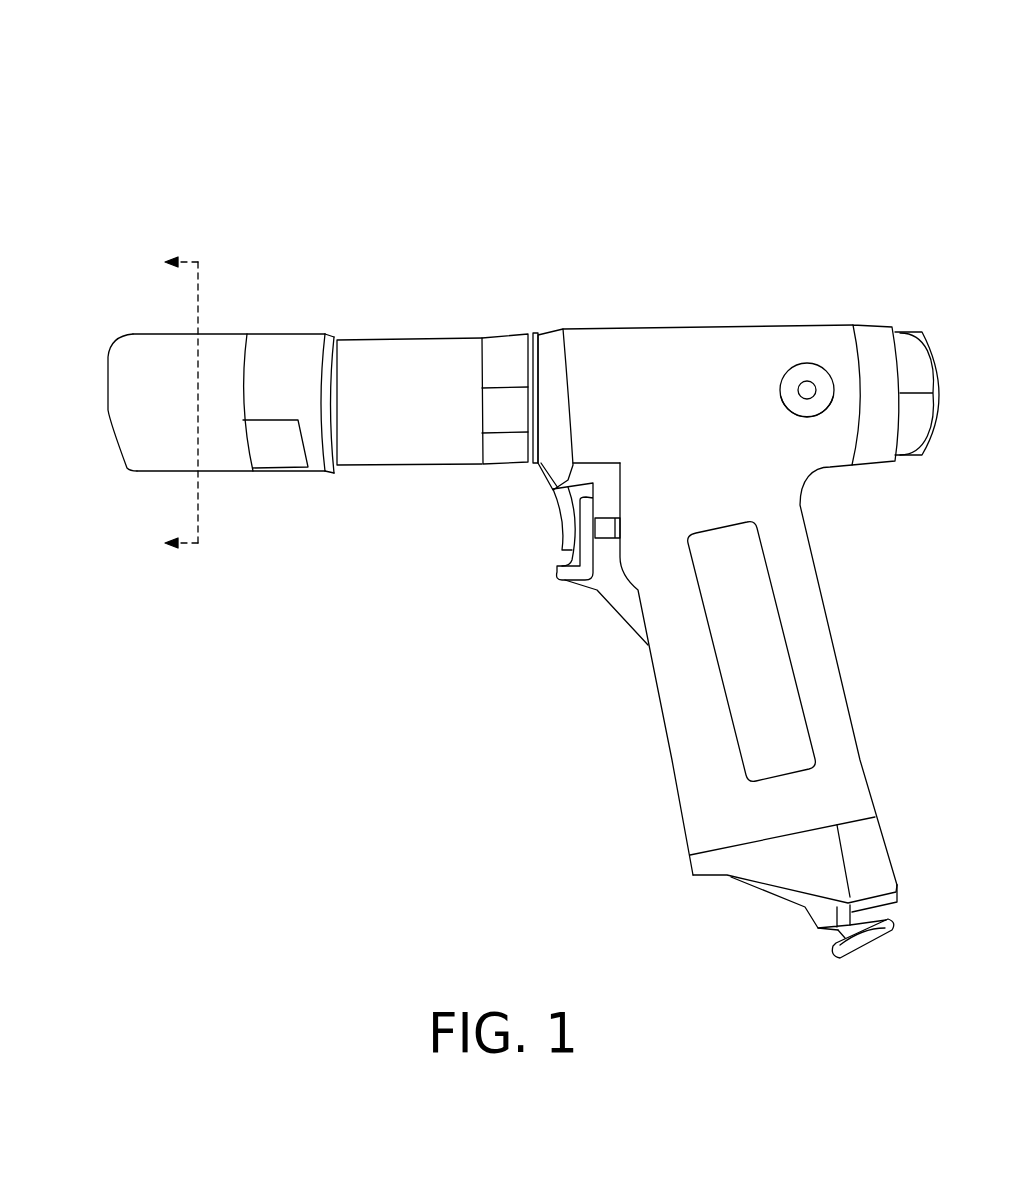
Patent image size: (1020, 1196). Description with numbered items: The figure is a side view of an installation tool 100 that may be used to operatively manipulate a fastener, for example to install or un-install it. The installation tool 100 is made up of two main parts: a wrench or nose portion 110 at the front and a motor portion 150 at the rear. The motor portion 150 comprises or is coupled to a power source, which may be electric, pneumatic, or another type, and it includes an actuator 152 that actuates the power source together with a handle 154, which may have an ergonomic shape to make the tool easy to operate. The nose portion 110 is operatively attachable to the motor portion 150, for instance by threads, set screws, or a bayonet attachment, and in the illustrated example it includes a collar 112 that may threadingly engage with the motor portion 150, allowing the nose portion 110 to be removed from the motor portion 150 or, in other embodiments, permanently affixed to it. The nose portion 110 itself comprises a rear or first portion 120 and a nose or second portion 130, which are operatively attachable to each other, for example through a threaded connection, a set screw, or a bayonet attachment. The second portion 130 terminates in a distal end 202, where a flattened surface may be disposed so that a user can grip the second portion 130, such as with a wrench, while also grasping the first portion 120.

The installation tool 100 is at (840, 74).
The nose portion 110 is at (117, 255).
The collar 112 is at (505, 346).
The first portion 120 is at (403, 346).
The second portion 130 is at (233, 340).
The motor portion 150 is at (523, 197).
The actuator 152 is at (568, 579).
The handle 154 is at (685, 753).
The distal end 202 is at (112, 438).